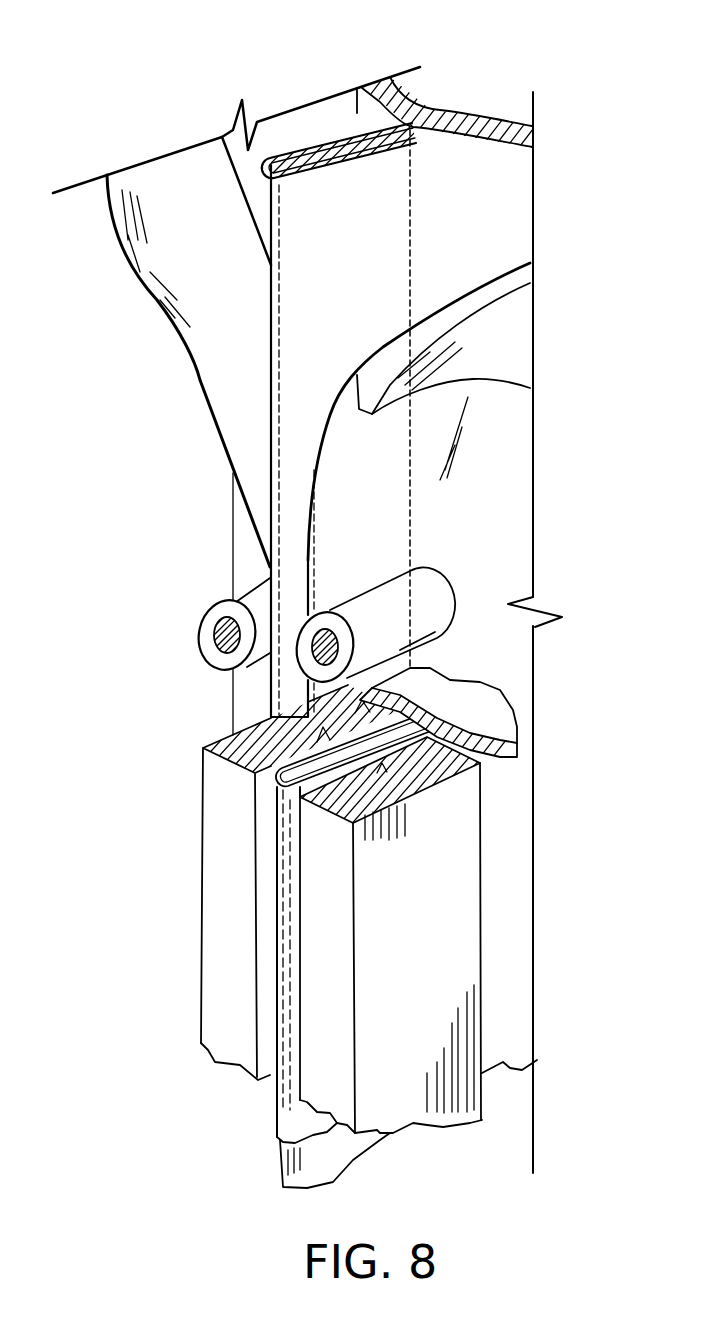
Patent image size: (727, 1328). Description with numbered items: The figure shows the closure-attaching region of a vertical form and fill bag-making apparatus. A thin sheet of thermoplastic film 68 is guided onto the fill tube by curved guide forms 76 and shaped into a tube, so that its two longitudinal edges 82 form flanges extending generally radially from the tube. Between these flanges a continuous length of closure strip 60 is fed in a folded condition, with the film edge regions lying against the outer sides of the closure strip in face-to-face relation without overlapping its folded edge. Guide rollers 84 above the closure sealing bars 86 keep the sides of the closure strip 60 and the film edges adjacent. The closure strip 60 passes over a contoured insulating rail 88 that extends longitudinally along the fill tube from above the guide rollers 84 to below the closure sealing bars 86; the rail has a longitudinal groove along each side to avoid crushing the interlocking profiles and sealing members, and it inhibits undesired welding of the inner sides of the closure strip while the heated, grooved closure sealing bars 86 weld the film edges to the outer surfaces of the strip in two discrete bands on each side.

The closure strip 60 is at (400, 236).
The thermoplastic film 68 is at (208, 244).
The curved guide forms 76 is at (517, 337).
The longitudinal edges 82 is at (392, 345).
The guide rollers 84 is at (218, 600).
The closure sealing bars 86 is at (200, 917).
The insulating rail 88 is at (388, 117).